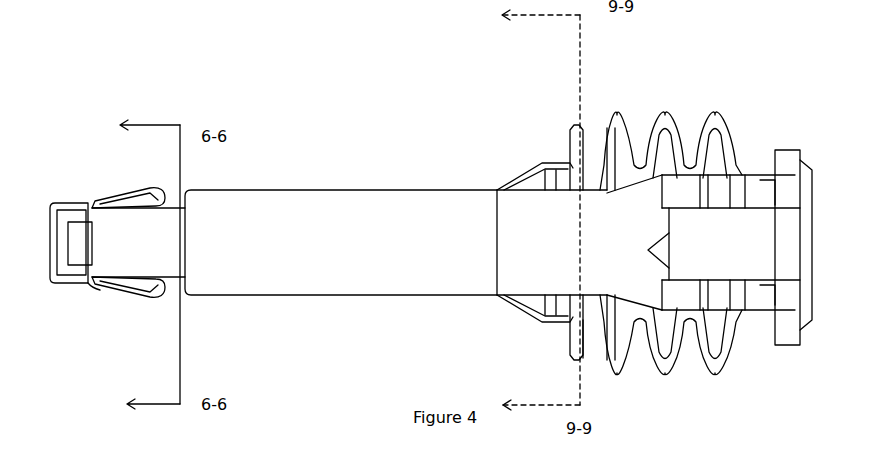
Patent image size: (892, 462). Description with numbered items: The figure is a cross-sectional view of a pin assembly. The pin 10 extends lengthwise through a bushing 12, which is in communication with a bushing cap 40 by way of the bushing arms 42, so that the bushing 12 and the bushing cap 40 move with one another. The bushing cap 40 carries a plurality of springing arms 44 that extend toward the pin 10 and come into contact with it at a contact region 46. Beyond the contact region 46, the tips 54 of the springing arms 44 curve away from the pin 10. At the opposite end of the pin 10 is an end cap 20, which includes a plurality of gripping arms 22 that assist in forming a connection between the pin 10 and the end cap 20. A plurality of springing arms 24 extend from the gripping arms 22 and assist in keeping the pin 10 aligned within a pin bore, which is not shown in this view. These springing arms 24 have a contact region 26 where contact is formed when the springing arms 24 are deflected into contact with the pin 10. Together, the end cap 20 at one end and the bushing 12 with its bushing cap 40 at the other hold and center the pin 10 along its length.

The pin 10 is at (349, 215).
The bushing 12 is at (667, 117).
The end cap 20 is at (113, 197).
The gripping arms 22 is at (52, 263).
The springing arms 24 is at (143, 290).
The contact region 26 is at (88, 283).
The bushing cap 40 is at (537, 160).
The bushing arms 42 is at (580, 358).
The springing arms 44 is at (515, 300).
The contact region 46 is at (481, 305).
The tips 54 is at (503, 190).